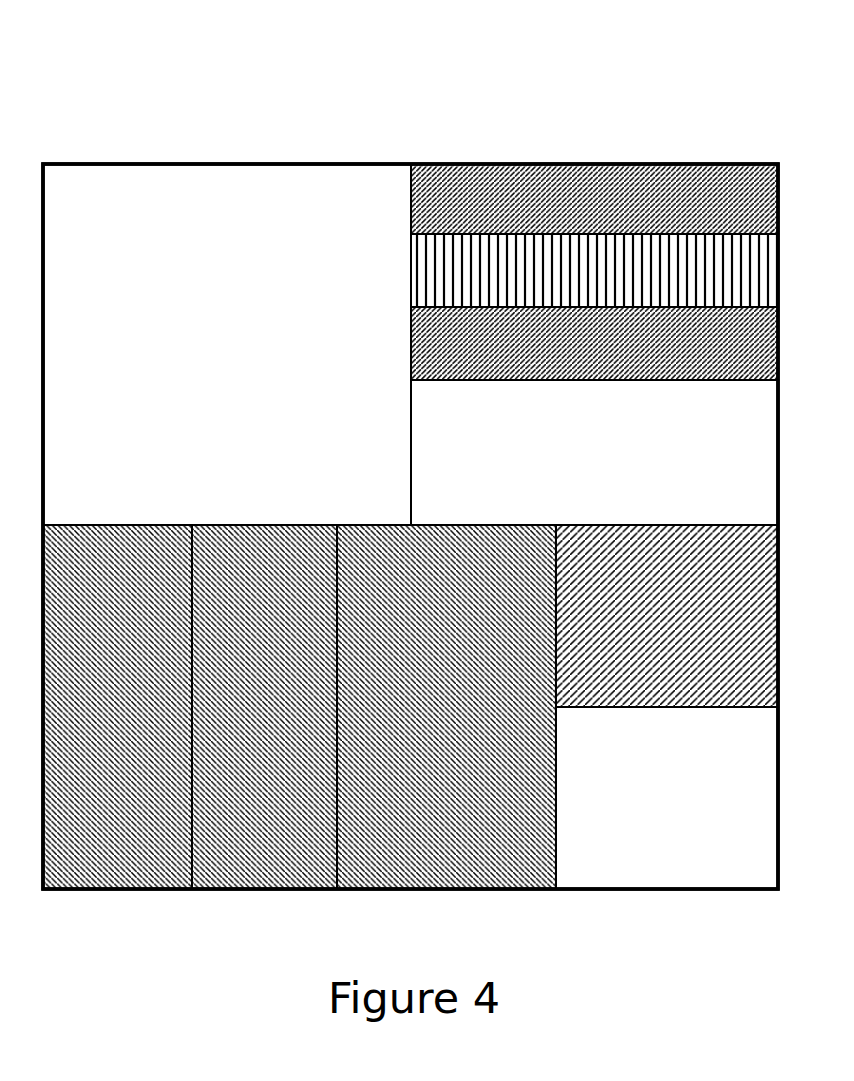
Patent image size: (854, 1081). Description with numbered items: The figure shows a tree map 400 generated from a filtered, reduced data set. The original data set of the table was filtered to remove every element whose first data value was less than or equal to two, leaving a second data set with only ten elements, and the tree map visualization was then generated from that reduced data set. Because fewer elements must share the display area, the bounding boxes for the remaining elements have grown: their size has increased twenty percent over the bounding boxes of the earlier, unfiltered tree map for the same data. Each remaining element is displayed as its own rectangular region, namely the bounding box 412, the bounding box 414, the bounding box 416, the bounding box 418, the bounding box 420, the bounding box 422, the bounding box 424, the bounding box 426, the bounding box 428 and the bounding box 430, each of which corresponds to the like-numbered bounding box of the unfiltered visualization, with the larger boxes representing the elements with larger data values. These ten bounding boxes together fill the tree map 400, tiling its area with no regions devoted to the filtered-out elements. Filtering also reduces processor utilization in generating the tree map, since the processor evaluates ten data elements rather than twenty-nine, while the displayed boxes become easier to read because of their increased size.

The memory device layout 400 is at (628, 105).
The bounding box 412 is at (243, 354).
The bounding box 414 is at (464, 719).
The bounding box 416 is at (281, 719).
The bounding box 418 is at (607, 462).
The bounding box 420 is at (134, 719).
The bounding box 422 is at (684, 808).
The bounding box 424 is at (684, 624).
The bounding box 426 is at (608, 355).
The bounding box 428 is at (609, 206).
The bounding box 430 is at (608, 281).